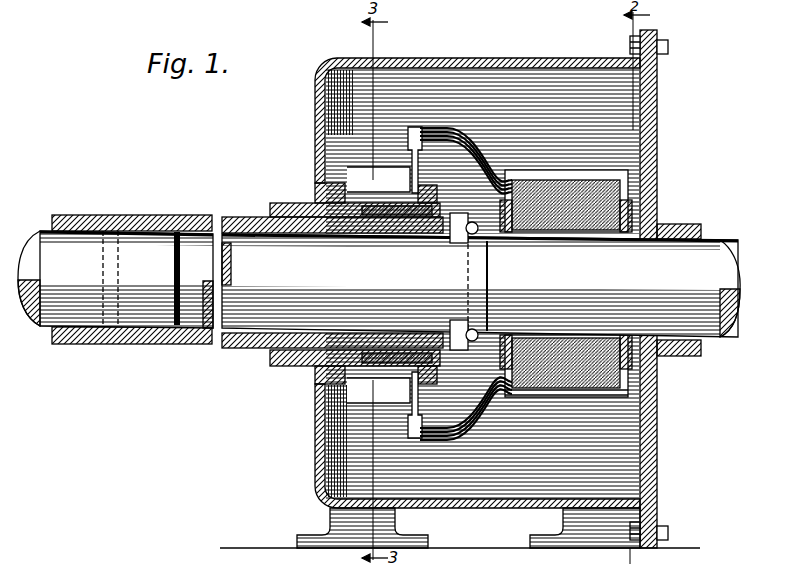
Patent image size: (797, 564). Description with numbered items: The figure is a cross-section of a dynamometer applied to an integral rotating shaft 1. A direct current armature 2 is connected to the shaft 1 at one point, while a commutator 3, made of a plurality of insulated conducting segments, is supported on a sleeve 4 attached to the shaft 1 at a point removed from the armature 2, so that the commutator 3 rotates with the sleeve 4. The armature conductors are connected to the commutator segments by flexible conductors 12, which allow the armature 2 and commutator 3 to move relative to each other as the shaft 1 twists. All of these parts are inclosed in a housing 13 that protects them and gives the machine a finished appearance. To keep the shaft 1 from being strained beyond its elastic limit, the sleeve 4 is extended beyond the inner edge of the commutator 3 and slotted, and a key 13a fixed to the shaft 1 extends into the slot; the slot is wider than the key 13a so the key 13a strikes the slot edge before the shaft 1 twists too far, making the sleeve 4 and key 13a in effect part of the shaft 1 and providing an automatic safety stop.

The rotating shaft 1 is at (40, 232).
The direct current armature 2 is at (600, 200).
The commutator 3 is at (384, 282).
The sleeve 4 is at (178, 216).
The flexible conductors 12 is at (488, 172).
The housing 13 is at (510, 59).
The key 13a is at (465, 284).